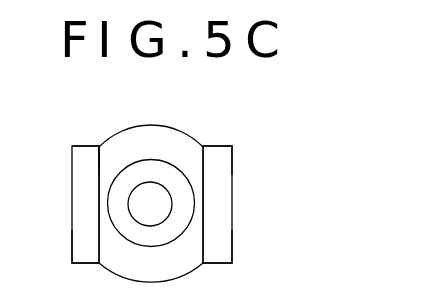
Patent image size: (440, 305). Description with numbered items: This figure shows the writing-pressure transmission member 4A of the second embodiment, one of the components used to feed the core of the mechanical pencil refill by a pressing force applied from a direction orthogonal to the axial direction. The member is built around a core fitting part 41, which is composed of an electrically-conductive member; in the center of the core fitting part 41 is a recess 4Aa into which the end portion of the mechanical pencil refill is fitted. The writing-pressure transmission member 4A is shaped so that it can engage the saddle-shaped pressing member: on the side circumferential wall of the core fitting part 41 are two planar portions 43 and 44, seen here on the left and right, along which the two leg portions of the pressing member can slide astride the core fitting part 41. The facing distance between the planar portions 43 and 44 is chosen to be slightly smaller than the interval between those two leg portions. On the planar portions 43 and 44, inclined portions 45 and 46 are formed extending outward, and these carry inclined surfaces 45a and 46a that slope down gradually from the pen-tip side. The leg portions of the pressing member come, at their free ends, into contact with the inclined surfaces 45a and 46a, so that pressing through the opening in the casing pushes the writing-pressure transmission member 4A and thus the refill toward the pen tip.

The core fitting part 41 is at (181, 138).
The writing-pressure transmission member 4A is at (170, 122).
The recess 4Aa is at (157, 212).
The planar portion 43 is at (98, 189).
The planar portion 44 is at (205, 181).
The inclined portion 45 is at (78, 253).
The inclined surface 45a is at (84, 160).
The inclined portion 46 is at (218, 251).
The inclined surface 46a is at (215, 157).